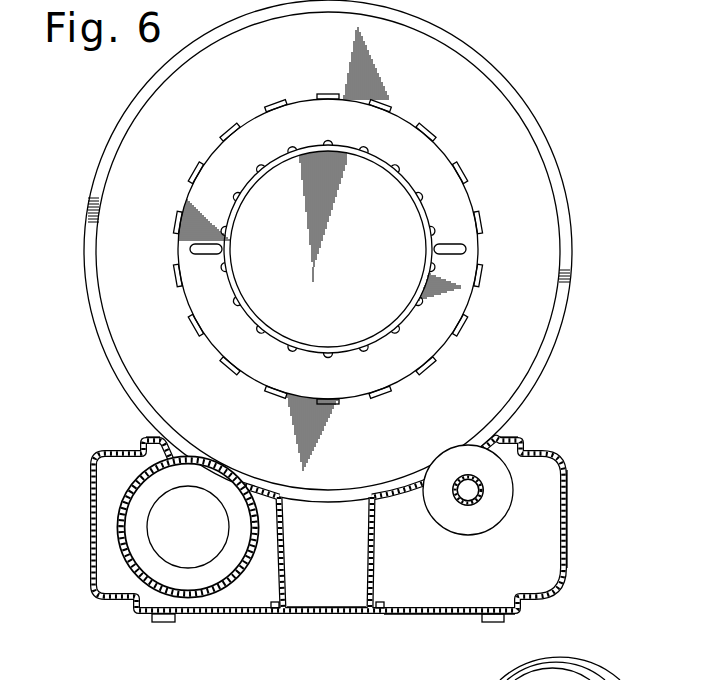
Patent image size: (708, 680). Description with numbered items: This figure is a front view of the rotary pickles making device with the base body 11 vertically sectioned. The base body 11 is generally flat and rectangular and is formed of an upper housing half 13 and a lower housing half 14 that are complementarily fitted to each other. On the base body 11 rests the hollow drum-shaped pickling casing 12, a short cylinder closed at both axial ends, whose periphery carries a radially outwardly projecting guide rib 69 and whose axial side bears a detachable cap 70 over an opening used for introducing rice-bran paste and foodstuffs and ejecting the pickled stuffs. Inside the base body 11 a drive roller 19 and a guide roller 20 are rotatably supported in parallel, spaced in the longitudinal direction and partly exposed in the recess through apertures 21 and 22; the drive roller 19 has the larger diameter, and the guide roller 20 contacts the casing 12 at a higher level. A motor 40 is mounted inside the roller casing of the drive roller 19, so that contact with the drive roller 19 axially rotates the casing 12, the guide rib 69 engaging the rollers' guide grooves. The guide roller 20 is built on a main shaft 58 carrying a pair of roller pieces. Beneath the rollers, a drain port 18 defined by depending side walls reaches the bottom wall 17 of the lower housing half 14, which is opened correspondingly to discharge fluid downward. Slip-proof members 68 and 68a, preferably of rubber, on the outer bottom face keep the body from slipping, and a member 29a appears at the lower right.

The pickling casing 12 is at (580, 247).
The guide rib 69 is at (542, 141).
The detachable cap 70 is at (395, 222).
The base body 11 is at (578, 492).
The upper housing half 13 is at (569, 516).
The lower housing half 14 is at (569, 560).
The aperture 21 is at (160, 437).
The aperture 22 is at (490, 440).
The bottom wall 17 is at (422, 615).
The drain port 18 is at (332, 594).
The drive roller 19 is at (128, 584).
The motor 40 is at (202, 556).
The slip-proof member 68 is at (160, 624).
The slip-proof member 68a is at (492, 622).
The guide roller 20 is at (520, 464).
The main shaft 58 is at (484, 492).
The adjacent member 29a is at (562, 662).